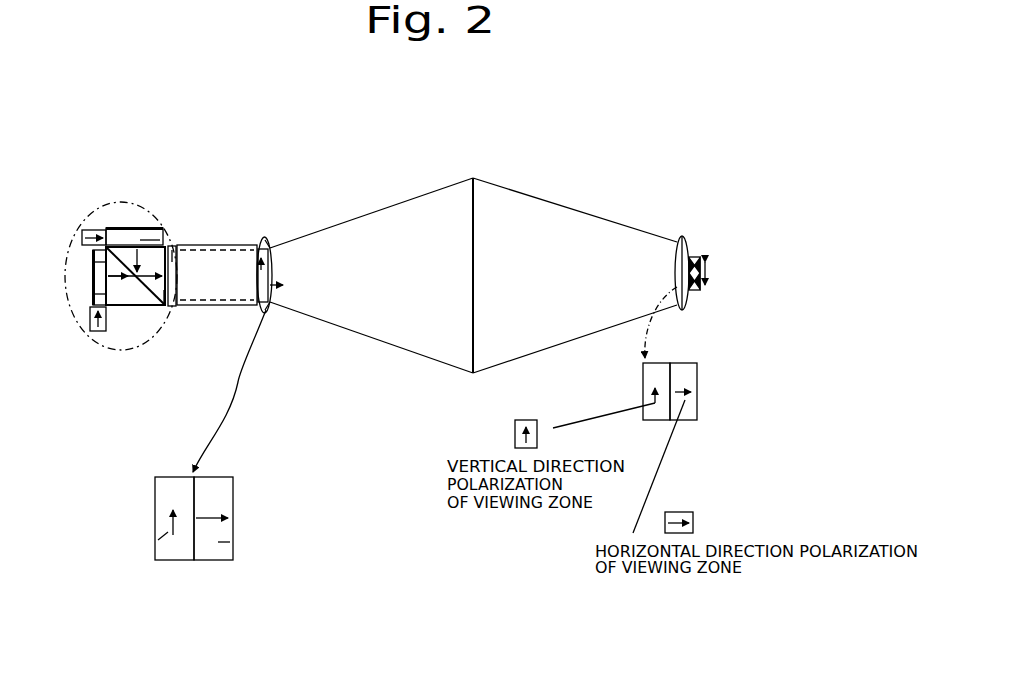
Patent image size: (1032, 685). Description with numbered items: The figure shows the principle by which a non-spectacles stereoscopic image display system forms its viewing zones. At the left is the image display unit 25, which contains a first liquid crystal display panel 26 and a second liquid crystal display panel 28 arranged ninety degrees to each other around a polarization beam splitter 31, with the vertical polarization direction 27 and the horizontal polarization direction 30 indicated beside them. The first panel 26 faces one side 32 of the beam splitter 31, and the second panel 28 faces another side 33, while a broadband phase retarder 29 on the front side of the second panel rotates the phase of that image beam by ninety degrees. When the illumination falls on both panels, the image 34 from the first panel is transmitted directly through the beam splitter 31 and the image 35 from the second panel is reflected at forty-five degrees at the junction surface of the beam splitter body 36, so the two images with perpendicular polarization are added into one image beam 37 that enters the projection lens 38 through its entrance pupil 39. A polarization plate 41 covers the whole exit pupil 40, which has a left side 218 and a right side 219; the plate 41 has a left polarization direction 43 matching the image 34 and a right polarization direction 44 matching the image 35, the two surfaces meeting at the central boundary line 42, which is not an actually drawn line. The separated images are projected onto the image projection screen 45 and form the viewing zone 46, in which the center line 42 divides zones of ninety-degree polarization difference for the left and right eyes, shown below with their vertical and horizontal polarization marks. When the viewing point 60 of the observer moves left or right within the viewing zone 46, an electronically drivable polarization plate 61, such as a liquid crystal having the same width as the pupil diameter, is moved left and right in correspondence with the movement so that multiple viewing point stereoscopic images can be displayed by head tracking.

The image display unit 25 is at (87, 221).
The first liquid crystal display panel 26 is at (93, 278).
The vertical polarization direction 27 is at (92, 321).
The second liquid crystal display panel 28 is at (130, 228).
The broadband phase retarder 29 is at (145, 230).
The horizontal polarization direction 30 is at (92, 230).
The polarization beam splitter 31 is at (118, 308).
The side of the polarization beam splitter 32 is at (95, 293).
The side of the polarization beam splitter 33 is at (162, 238).
The image from the first liquid crystal display panel 34 is at (93, 251).
The image from the second liquid crystal display panel 35 is at (145, 257).
The polarization beam splitter 36 is at (160, 278).
The image beam 37 is at (160, 300).
The projection lens 38 is at (217, 258).
The entrance pupil 39 is at (173, 262).
The exit pupil 40 is at (263, 238).
The polarization plate 41 is at (175, 477).
The central boundary line 42 is at (672, 382).
The left polarization direction 43 is at (168, 532).
The right polarization direction 44 is at (218, 542).
The image projection screen 45 is at (473, 262).
The viewing zone 46 is at (663, 363).
The viewing point 60 is at (692, 256).
The polarization plate 61 is at (680, 270).
The left side of the exit pupil 218 is at (272, 236).
The right side of the exit pupil 219 is at (270, 307).